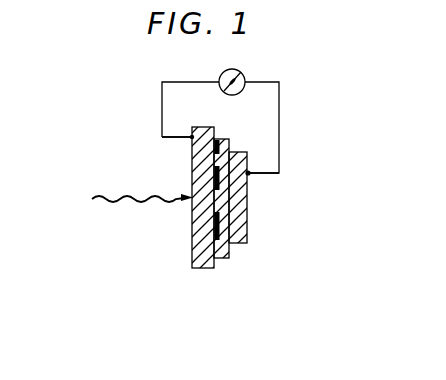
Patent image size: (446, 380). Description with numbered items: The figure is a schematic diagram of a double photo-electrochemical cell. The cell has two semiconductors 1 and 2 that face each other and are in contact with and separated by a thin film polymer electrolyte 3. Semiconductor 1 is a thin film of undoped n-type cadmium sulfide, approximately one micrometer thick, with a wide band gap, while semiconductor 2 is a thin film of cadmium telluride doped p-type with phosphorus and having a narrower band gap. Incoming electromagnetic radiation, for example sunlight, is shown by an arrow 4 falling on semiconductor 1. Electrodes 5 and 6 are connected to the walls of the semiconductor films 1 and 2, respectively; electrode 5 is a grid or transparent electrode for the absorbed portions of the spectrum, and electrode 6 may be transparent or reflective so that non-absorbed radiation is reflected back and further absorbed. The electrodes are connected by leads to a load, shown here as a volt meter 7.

The semiconductor 1 is at (213, 270).
The semiconductor 2 is at (243, 246).
The polymer electrolyte 3 is at (222, 258).
The arrow 4 is at (148, 203).
The electrode 5 is at (191, 140).
The electrode 6 is at (250, 176).
The meter 7 is at (246, 73).